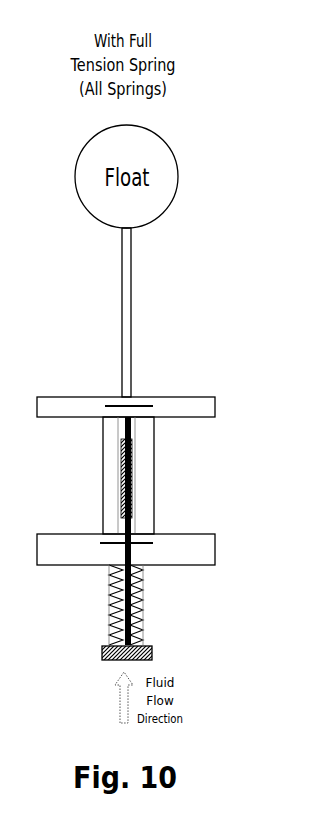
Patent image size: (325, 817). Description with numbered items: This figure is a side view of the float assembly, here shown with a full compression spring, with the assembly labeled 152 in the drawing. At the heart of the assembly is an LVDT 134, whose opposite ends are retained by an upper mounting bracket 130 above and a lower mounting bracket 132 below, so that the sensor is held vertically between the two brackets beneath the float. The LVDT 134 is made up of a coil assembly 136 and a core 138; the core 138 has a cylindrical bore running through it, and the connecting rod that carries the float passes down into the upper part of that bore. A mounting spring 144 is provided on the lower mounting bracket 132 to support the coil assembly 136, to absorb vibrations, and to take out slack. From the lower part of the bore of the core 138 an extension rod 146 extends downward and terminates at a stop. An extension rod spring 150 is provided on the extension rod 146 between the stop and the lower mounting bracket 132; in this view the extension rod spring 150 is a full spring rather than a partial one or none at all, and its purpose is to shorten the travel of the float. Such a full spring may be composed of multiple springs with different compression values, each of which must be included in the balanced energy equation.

The upper mounting bracket 130 is at (203, 408).
The lower mounting bracket 132 is at (204, 550).
The LVDT 134 is at (158, 508).
The coil assembly 136 is at (140, 438).
The core 138 is at (138, 475).
The mounting spring 144 is at (99, 545).
The extension rod 146 is at (120, 607).
The extension rod spring 150 is at (153, 585).
The float assembly 152 is at (28, 394).